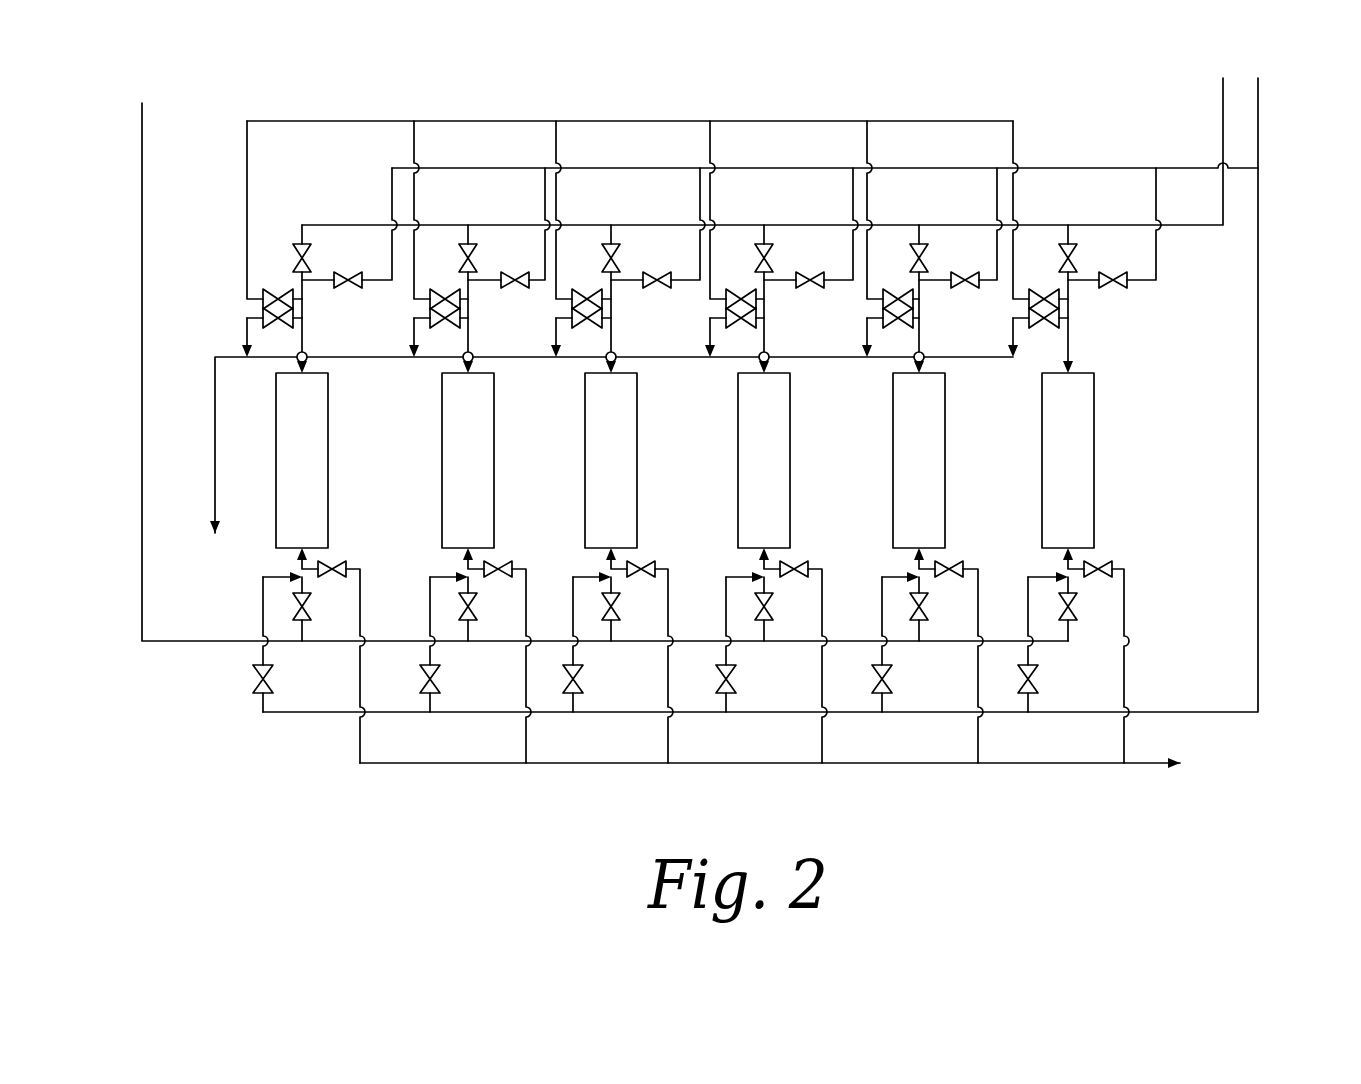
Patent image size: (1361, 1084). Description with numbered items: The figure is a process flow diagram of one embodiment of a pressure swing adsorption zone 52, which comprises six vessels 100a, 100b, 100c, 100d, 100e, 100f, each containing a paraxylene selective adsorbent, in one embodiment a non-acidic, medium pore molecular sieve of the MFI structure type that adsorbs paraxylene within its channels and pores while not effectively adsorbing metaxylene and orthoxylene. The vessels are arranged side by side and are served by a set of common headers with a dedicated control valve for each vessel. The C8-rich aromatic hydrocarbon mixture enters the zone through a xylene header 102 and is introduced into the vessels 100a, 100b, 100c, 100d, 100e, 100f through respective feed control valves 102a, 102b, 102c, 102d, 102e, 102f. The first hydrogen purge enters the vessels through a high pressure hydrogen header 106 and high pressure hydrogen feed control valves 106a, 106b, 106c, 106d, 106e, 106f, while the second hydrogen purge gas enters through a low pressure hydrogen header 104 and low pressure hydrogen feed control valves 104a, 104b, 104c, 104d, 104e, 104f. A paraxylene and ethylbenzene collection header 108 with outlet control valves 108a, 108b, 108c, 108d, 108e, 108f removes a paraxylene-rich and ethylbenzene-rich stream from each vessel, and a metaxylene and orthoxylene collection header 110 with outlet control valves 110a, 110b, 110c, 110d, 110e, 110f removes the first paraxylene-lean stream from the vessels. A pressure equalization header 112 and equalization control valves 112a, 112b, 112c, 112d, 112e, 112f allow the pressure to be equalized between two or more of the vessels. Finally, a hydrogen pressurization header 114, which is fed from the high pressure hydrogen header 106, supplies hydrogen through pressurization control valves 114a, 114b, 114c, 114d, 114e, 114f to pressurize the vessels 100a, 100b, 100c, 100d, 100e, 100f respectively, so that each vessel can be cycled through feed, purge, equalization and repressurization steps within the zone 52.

The pressure swing adsorption zone 52 is at (230, 770).
The vessel 100a is at (302, 460).
The vessel 100b is at (468, 460).
The vessel 100c is at (611, 460).
The vessel 100d is at (764, 460).
The vessel 100e is at (919, 460).
The vessel 100f is at (1068, 460).
The xylene header 102 is at (142, 254).
The low pressure hydrogen header 104 is at (1223, 105).
The high pressure hydrogen header 106 is at (1258, 100).
The paraxylene and ethylbenzene collection header 108 is at (1060, 766).
The metaxylene and orthoxylene collection header 110 is at (215, 450).
The pressure equalization header 112 is at (622, 120).
The hydrogen pressurization header 114 is at (592, 168).
The feed control valve 102a is at (308, 598).
The feed control valve 102b is at (474, 598).
The feed control valve 102c is at (617, 598).
The feed control valve 102d is at (770, 598).
The feed control valve 102e is at (925, 598).
The feed control valve 102f is at (1074, 598).
The low pressure hydrogen feed control valve 104a is at (310, 254).
The low pressure hydrogen feed control valve 104b is at (476, 254).
The low pressure hydrogen feed control valve 104c is at (619, 254).
The low pressure hydrogen feed control valve 104d is at (772, 254).
The low pressure hydrogen feed control valve 104e is at (927, 254).
The low pressure hydrogen feed control valve 104f is at (1076, 254).
The high pressure hydrogen feed control valve 106a is at (273, 683).
The high pressure hydrogen feed control valve 106b is at (440, 683).
The high pressure hydrogen feed control valve 106c is at (583, 683).
The high pressure hydrogen feed control valve 106d is at (736, 683).
The high pressure hydrogen feed control valve 106e is at (892, 683).
The high pressure hydrogen feed control valve 106f is at (1038, 683).
The outlet control valve 108a is at (338, 560).
The outlet control valve 108b is at (504, 560).
The outlet control valve 108c is at (647, 560).
The outlet control valve 108d is at (800, 560).
The outlet control valve 108e is at (955, 560).
The outlet control valve 108f is at (1104, 560).
The outlet control valve 110a is at (278, 328).
The outlet control valve 110b is at (445, 328).
The outlet control valve 110c is at (587, 328).
The outlet control valve 110d is at (741, 328).
The outlet control valve 110e is at (898, 328).
The outlet control valve 110f is at (1044, 328).
The equalization control valve 112a is at (278, 289).
The equalization control valve 112b is at (445, 289).
The equalization control valve 112c is at (587, 289).
The equalization control valve 112d is at (741, 289).
The equalization control valve 112e is at (898, 289).
The equalization control valve 112f is at (1044, 289).
The pressurization control valve 114a is at (348, 290).
The pressurization control valve 114b is at (515, 290).
The pressurization control valve 114c is at (657, 290).
The pressurization control valve 114d is at (810, 290).
The pressurization control valve 114e is at (965, 290).
The pressurization control valve 114f is at (1113, 290).